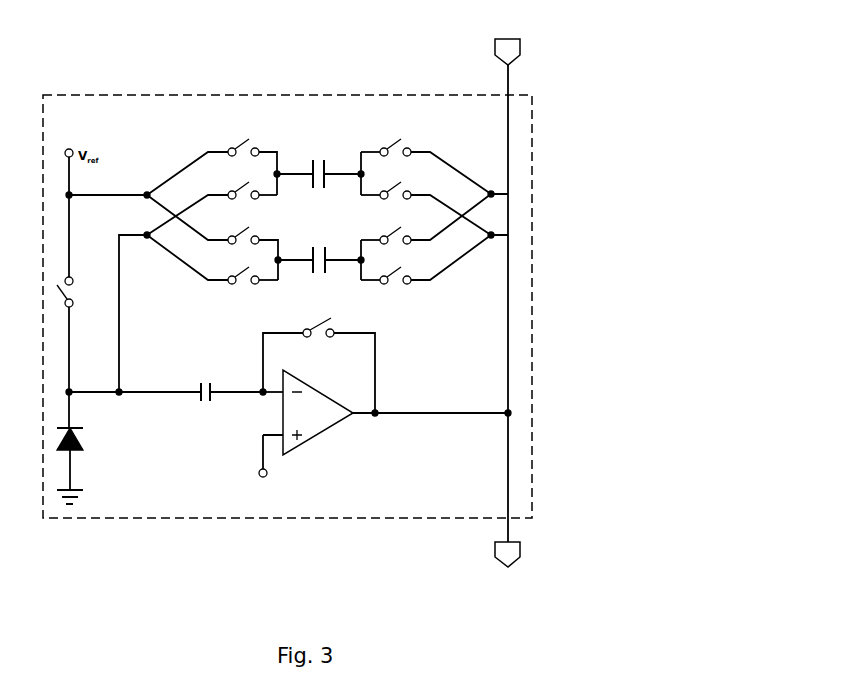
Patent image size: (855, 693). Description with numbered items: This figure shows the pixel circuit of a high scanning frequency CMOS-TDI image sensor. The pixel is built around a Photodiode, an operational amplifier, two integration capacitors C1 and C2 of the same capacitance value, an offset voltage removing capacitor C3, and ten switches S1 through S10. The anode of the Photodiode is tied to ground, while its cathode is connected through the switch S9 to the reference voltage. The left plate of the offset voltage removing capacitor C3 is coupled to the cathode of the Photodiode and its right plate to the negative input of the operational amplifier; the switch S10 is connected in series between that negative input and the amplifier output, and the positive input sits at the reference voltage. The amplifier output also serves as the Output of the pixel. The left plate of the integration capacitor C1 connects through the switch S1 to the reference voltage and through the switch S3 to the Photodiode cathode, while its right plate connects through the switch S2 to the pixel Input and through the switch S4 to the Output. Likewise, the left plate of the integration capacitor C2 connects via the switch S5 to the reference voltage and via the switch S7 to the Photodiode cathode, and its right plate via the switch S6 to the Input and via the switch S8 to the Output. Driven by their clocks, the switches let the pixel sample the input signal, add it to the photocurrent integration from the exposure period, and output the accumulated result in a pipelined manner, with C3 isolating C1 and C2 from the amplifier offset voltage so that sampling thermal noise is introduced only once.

The switch S1 is at (252, 167).
The switch S2 is at (426, 166).
The switch S3 is at (252, 201).
The switch S4 is at (426, 208).
The switch S5 is at (253, 253).
The switch S6 is at (426, 229).
The switch S7 is at (253, 286).
The switch S8 is at (426, 270).
The switch S9 is at (77, 334).
The switch S10 is at (319, 365).
The integration capacitor C1 is at (319, 187).
The integration capacitor C2 is at (319, 271).
The offset voltage removing capacitor C3 is at (224, 406).
The photodiode Photodiode is at (137, 448).
The input end of the pixel Input is at (509, 279).
The output end of the pixel Output is at (515, 564).